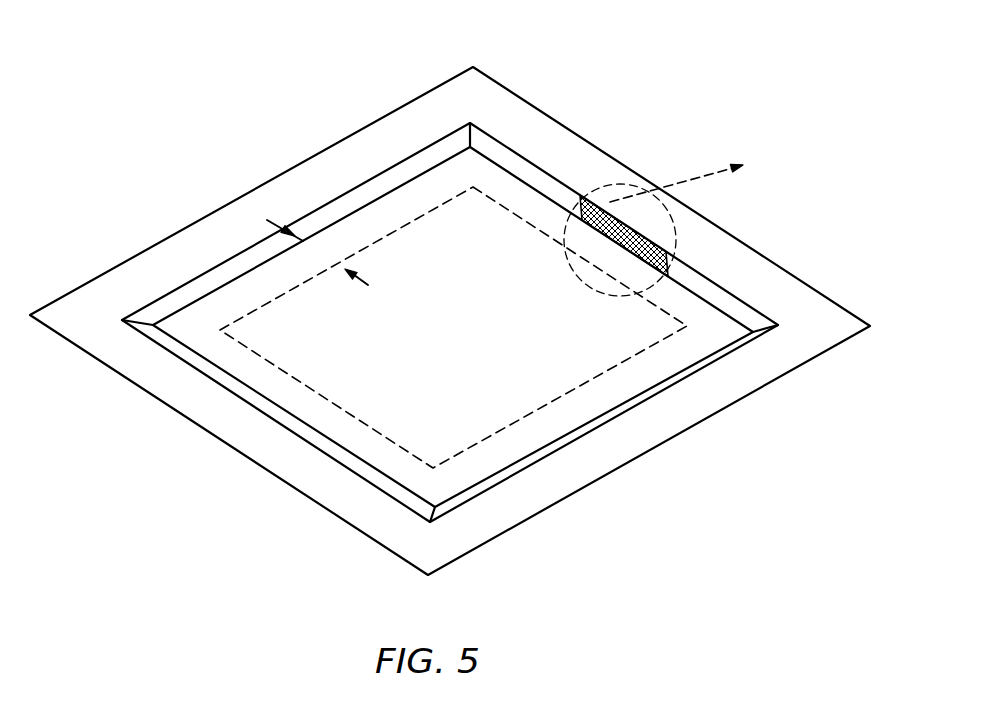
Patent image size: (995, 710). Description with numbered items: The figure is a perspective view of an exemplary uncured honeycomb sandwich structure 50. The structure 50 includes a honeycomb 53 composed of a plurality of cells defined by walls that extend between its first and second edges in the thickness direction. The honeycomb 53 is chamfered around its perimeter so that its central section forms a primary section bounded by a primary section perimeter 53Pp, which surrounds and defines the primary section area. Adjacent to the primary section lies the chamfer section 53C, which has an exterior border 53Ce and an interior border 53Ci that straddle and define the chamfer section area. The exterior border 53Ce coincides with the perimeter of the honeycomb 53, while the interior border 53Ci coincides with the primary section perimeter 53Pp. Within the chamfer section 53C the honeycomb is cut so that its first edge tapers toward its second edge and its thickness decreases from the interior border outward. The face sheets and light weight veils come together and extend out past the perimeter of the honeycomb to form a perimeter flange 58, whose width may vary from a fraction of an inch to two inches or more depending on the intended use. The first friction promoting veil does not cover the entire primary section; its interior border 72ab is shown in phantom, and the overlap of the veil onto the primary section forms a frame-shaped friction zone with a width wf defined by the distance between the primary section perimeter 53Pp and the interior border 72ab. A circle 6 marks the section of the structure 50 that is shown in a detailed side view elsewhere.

The uncured honeycomb sandwich structure 50 is at (162, 180).
The perimeter flange 58 is at (537, 490).
The chamfer section 53C is at (463, 287).
The exterior border of the chamfer section 53Ce is at (533, 163).
The interior border of the chamfer section 53Ci is at (547, 196).
The primary section perimeter 53Pp is at (698, 292).
The honeycomb 53 is at (612, 240).
The interior border of the light weight veil 72ab is at (235, 340).
The friction zone width wf is at (283, 218).
The circle 6 is at (689, 178).